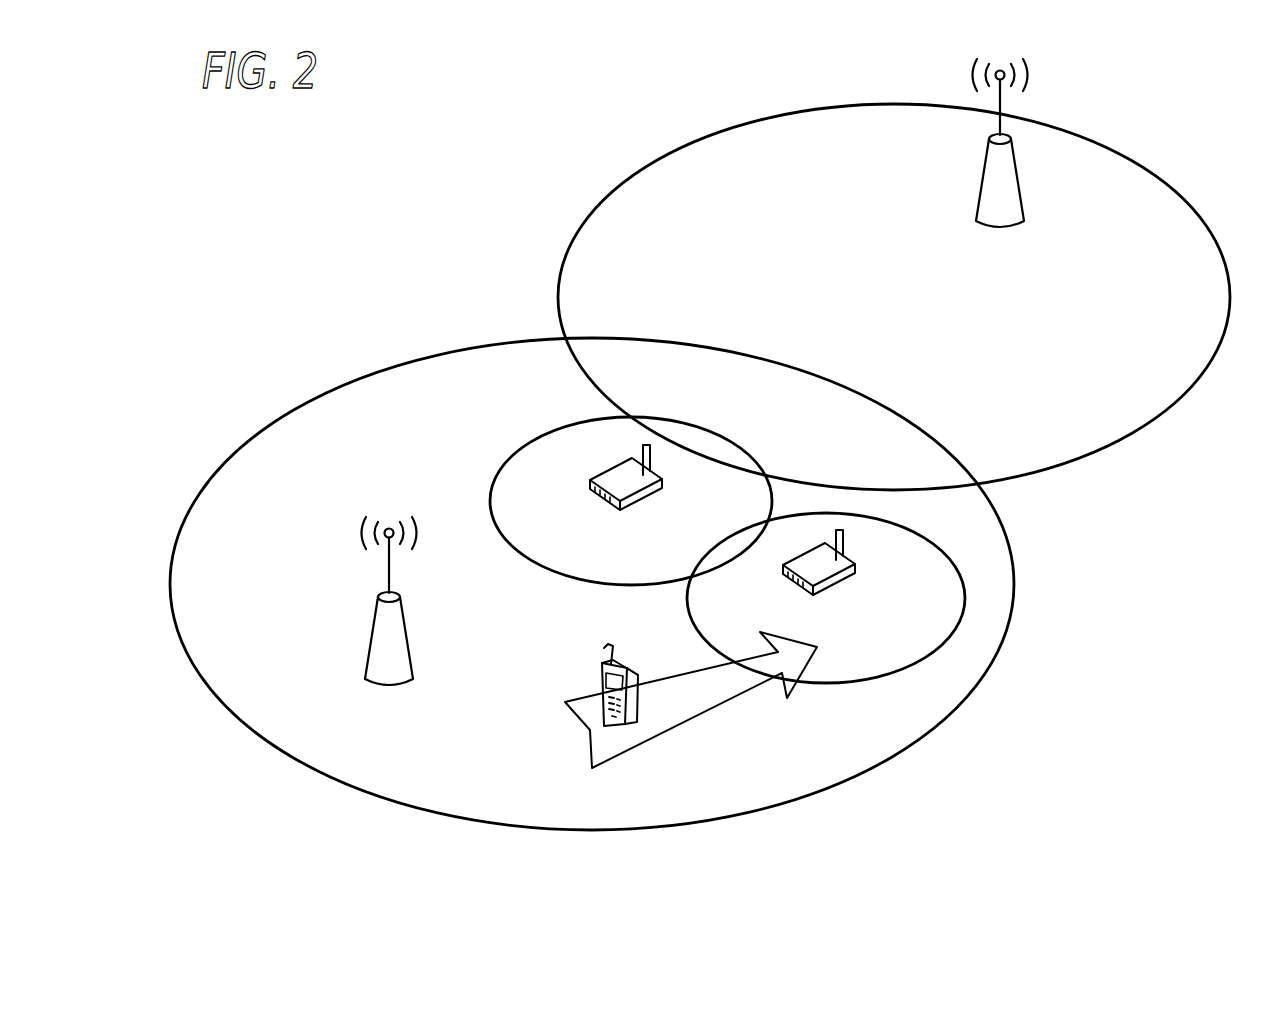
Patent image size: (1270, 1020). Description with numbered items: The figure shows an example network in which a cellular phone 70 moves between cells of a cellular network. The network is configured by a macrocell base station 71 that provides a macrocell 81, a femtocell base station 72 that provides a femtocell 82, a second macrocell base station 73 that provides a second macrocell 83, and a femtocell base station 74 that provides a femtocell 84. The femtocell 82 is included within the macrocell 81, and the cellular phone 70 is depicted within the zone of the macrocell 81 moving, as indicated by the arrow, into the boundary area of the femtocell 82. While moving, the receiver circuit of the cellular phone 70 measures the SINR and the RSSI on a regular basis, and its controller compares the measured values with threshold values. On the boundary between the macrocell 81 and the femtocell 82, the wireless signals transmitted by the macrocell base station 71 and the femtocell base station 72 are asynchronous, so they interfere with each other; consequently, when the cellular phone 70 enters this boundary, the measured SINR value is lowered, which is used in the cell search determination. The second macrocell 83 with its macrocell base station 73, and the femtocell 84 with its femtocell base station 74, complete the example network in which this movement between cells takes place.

The cellular phone 70 is at (640, 706).
The macrocell base station 71 is at (390, 690).
The femtocell base station 72 is at (818, 589).
The macrocell base station 73 is at (1001, 232).
The femtocell base station 74 is at (623, 503).
The macrocell 81 is at (597, 832).
The femtocell 82 is at (936, 649).
The macrocell 83 is at (1052, 467).
The femtocell 84 is at (623, 589).